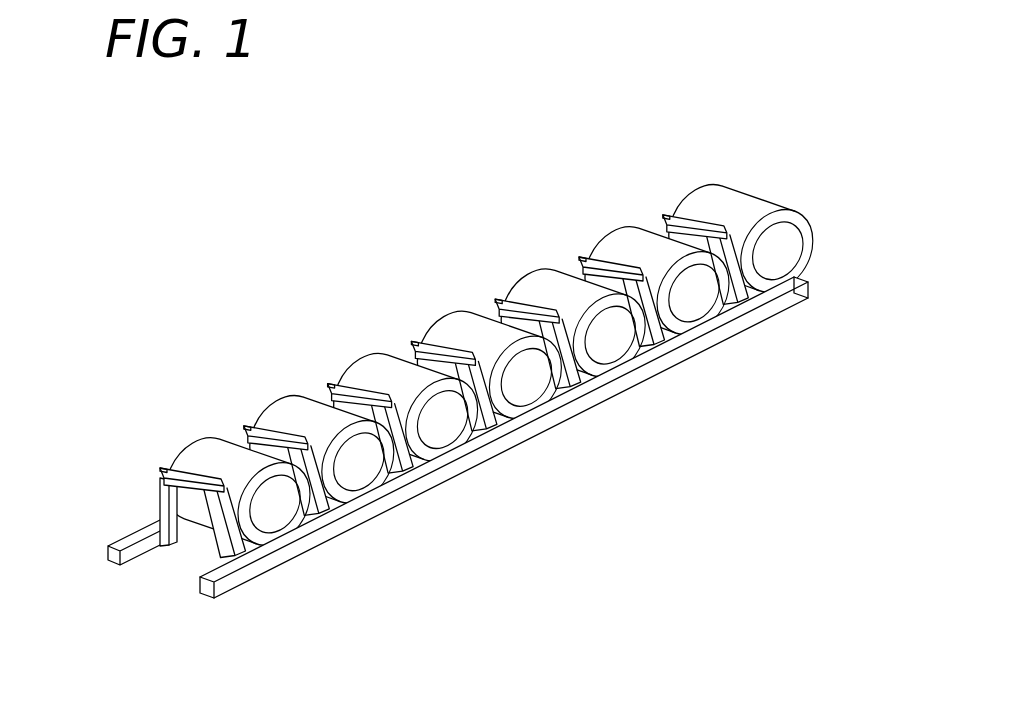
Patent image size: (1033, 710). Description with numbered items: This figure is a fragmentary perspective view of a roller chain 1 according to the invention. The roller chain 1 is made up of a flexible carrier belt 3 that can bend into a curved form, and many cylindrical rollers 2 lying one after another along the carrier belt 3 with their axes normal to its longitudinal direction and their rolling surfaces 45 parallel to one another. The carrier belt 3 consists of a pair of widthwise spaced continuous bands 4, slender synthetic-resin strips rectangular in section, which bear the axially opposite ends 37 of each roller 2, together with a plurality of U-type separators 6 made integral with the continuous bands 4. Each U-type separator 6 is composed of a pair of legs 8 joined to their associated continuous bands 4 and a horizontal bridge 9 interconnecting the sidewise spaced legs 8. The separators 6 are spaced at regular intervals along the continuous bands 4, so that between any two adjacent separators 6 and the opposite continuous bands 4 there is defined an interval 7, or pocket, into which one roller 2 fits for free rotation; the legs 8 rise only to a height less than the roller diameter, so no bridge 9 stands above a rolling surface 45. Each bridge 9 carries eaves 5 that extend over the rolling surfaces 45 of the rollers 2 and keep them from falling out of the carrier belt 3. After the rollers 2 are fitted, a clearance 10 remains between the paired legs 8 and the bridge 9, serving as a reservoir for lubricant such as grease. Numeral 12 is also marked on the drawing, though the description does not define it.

The roller chain 1 is at (459, 379).
The roller 2 is at (485, 393).
The carrier belt 3 is at (253, 567).
The continuous band 4 is at (130, 547).
The eaves 5 is at (468, 424).
The U-type separator 6 is at (388, 428).
The interval 7 is at (485, 365).
The leg 8 is at (484, 398).
The bridge 9 is at (442, 352).
The clearance 10 is at (208, 540).
The roller flange 12 is at (302, 460).
The axially opposite end 37 is at (600, 353).
The rolling surface 45 is at (313, 405).